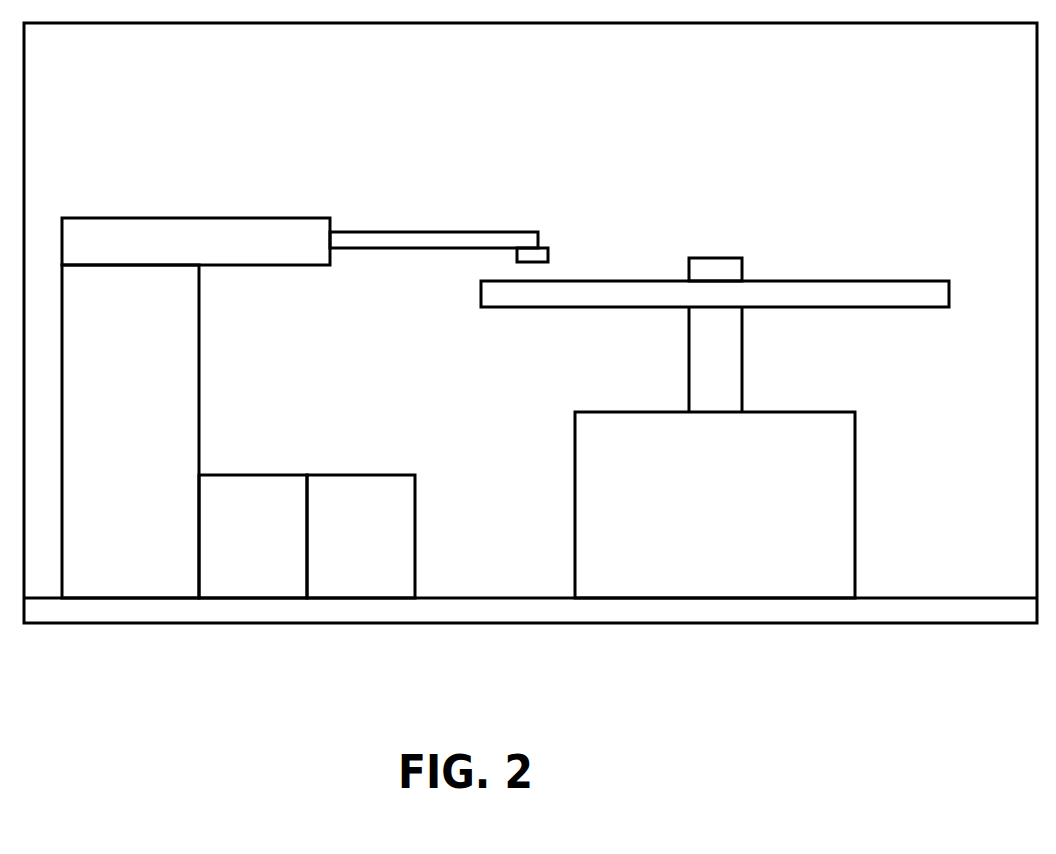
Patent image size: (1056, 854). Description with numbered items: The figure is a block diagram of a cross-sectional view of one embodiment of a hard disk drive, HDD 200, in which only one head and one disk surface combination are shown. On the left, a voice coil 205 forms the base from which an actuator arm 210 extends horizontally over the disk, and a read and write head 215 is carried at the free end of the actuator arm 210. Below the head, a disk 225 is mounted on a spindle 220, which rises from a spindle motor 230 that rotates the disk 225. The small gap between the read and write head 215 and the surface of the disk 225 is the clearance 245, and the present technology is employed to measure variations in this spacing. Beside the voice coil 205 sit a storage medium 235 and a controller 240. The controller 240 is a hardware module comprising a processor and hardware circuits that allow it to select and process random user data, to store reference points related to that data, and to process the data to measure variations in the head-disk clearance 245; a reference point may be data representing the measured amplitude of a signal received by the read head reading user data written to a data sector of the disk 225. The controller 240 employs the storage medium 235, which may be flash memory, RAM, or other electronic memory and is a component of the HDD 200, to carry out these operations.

The HDD 200 is at (64, 100).
The voice coil 205 is at (102, 515).
The actuator arm 210 is at (368, 216).
The read and write head 215 is at (555, 230).
The spindle 220 is at (720, 242).
The disk 225 is at (832, 264).
The spindle motor 230 is at (702, 511).
The storage medium 235 is at (231, 548).
The controller 240 is at (338, 548).
The clearance 245 is at (492, 269).